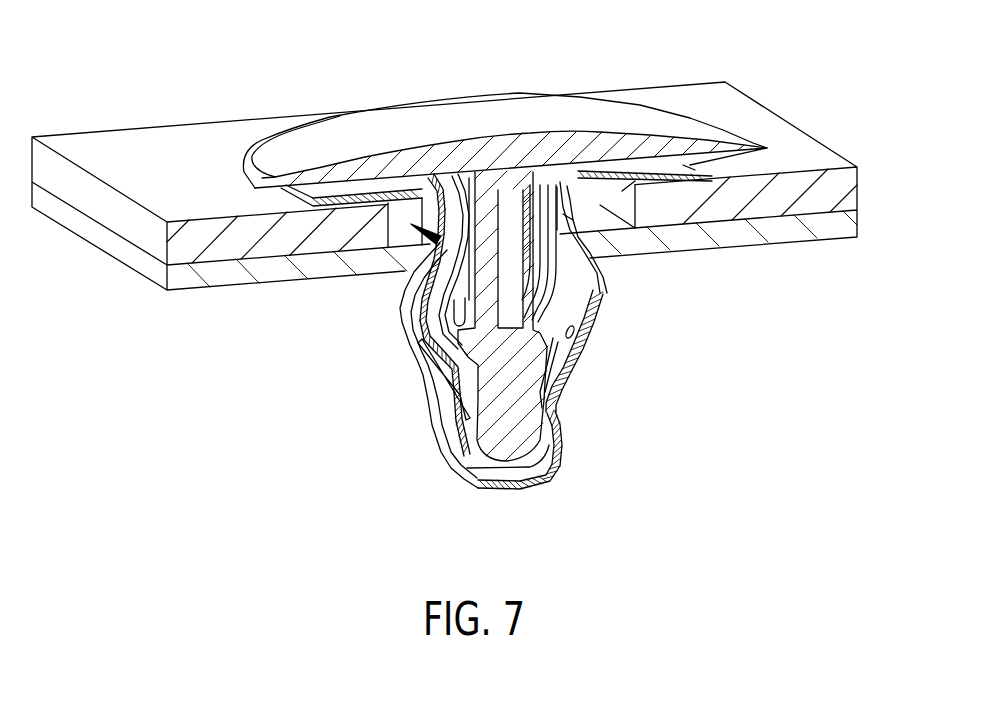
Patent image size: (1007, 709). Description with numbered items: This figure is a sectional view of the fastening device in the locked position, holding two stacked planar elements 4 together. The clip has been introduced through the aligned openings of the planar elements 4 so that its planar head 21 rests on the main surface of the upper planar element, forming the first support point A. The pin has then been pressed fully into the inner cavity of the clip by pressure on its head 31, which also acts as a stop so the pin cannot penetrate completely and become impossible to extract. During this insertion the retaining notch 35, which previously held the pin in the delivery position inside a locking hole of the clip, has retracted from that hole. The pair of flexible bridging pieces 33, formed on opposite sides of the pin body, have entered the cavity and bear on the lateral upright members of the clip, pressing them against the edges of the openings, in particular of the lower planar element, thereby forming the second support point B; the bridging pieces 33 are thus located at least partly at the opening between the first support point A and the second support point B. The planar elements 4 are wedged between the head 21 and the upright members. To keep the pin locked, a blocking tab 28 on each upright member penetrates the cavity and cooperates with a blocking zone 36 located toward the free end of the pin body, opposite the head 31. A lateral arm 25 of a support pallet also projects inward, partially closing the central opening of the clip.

The planar element 4 is at (852, 226).
The planar head 21 is at (632, 160).
The lateral arm 25 is at (440, 228).
The blocking tab 28 is at (567, 373).
The planar head 31 is at (473, 110).
The flexible bridging piece 33 is at (563, 255).
The retaining notch 35 is at (550, 335).
The blocking zone 36 is at (523, 413).
The first support point A is at (695, 170).
The second support point B is at (573, 220).